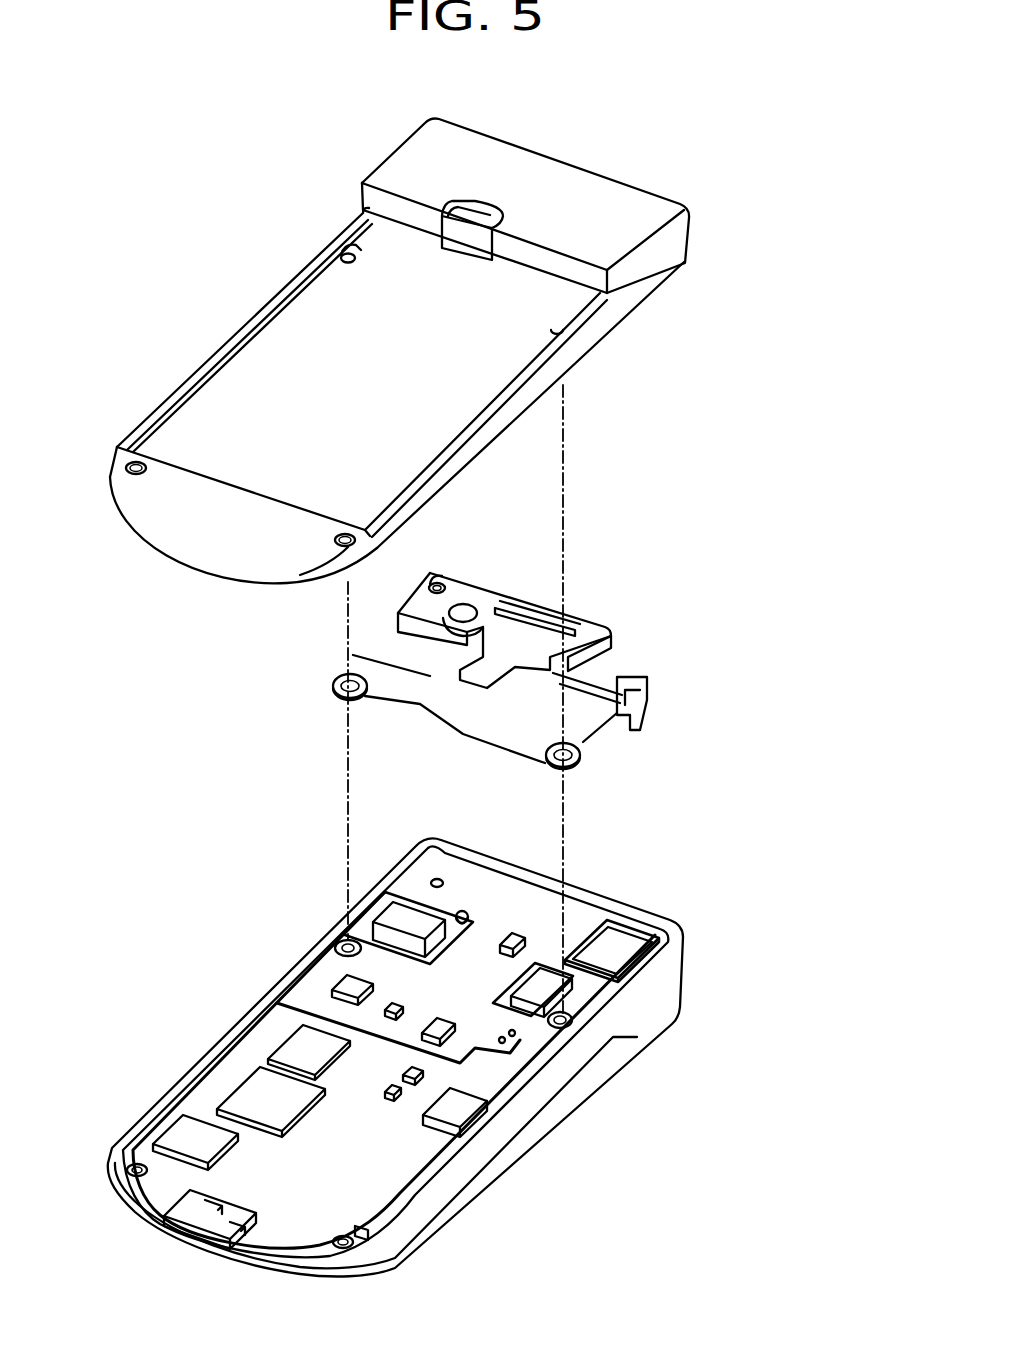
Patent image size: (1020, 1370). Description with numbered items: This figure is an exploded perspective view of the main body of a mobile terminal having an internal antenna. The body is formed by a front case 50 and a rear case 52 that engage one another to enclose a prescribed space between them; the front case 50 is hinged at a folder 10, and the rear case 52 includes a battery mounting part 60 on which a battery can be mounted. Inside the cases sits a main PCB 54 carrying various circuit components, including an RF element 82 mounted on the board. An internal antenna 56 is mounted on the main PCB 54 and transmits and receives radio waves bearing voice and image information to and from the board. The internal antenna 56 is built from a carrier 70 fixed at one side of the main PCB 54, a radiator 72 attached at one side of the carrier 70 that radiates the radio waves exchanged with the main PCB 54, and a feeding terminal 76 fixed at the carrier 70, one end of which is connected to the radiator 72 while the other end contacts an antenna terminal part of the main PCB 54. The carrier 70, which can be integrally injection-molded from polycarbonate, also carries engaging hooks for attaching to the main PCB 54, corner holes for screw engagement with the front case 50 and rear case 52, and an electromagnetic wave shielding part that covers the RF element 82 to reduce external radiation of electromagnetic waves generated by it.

The folder 10 is at (535, 1147).
The front case 50 is at (452, 1182).
The rear case 52 is at (657, 263).
The main PCB 54 is at (433, 1064).
The internal antenna 56 is at (541, 647).
The battery mounting part 60 is at (250, 357).
The carrier 70 is at (457, 700).
The radiator 72 is at (528, 592).
The feeding terminal 76 is at (443, 578).
The RF element 82 is at (548, 990).